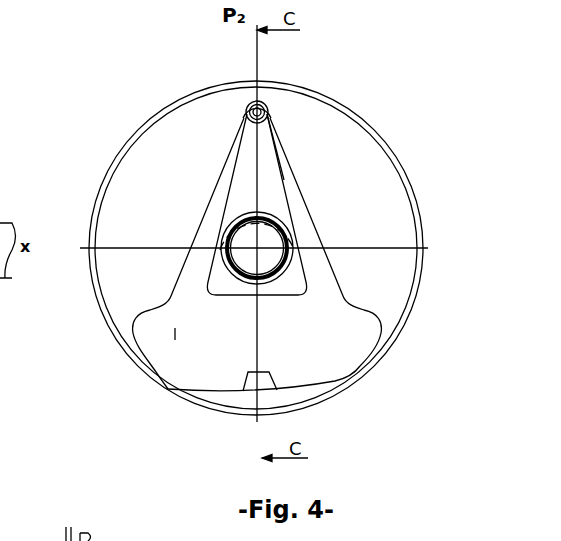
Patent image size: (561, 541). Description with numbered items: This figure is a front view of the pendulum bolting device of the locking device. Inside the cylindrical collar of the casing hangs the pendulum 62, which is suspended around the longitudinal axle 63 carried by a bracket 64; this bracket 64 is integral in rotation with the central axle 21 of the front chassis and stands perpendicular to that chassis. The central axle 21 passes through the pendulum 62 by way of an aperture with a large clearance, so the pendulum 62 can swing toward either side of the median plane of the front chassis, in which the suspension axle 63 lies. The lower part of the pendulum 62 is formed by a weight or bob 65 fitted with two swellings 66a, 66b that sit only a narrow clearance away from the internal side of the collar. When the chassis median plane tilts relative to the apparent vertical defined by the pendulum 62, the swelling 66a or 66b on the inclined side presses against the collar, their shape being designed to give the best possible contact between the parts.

The central axle 21 is at (280, 222).
The pendulum 62 is at (305, 234).
The longitudinal axle 63 is at (247, 108).
The bracket 64 is at (283, 178).
The weight or bob 65 is at (240, 348).
The swelling 66a is at (365, 363).
The swelling 66b is at (195, 330).